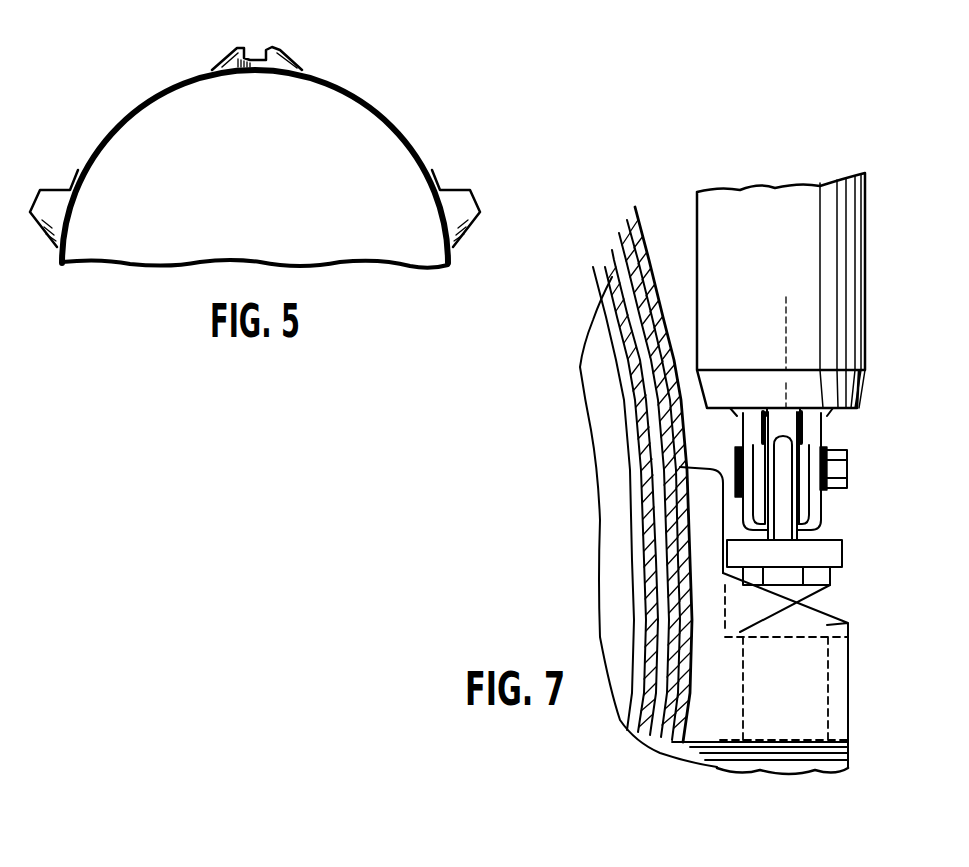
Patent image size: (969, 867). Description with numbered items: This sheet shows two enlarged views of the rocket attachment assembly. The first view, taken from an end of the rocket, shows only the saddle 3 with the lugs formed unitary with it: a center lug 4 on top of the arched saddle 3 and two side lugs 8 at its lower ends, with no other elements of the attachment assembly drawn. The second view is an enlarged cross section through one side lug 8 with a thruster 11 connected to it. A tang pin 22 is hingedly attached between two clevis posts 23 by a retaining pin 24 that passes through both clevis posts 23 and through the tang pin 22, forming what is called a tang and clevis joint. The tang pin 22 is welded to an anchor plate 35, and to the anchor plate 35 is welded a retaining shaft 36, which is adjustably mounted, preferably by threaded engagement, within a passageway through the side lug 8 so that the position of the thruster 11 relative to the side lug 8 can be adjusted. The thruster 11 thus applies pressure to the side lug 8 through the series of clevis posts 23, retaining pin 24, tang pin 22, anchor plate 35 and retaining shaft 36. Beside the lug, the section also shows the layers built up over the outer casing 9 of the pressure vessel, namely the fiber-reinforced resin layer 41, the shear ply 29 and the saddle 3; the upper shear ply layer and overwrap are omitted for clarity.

In FIG. 5, the saddle 3 is at (400, 130).
In FIG. 7, the saddle 3 is at (625, 487).
In FIG. 5, the center lug 4 is at (287, 62).
In FIG. 5, the side lug 8 is at (58, 193).
In FIG. 7, the side lug 8 is at (848, 623).
In FIG. 7, the thruster 11 is at (707, 195).
In FIG. 7, the outer casing 9 is at (617, 290).
In FIG. 7, the fiber-reinforced resin layer 41 is at (632, 320).
In FIG. 7, the shear ply 29 is at (650, 393).
In FIG. 7, the clevis posts 23 is at (737, 437).
In FIG. 7, the retaining pin 24 is at (847, 470).
In FIG. 7, the tang pin 22 is at (797, 533).
In FIG. 7, the anchor plate 35 is at (833, 552).
In FIG. 7, the retaining shaft 36 is at (818, 573).